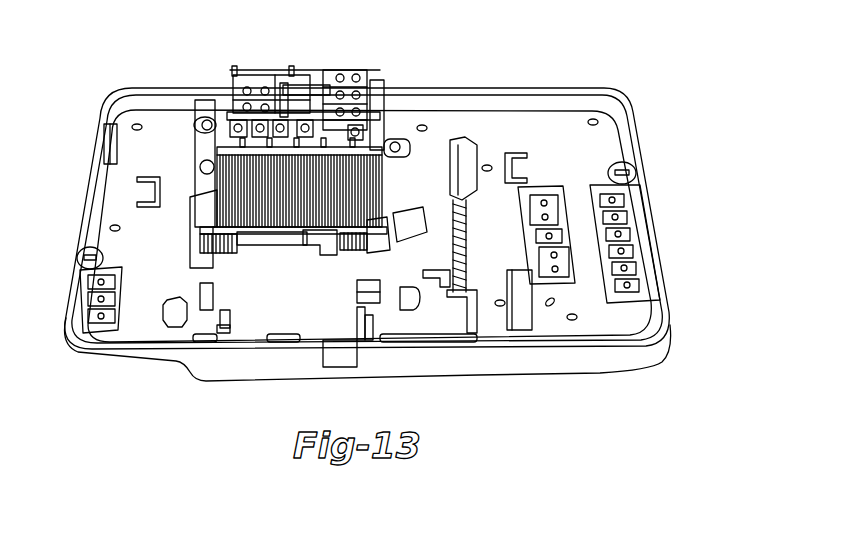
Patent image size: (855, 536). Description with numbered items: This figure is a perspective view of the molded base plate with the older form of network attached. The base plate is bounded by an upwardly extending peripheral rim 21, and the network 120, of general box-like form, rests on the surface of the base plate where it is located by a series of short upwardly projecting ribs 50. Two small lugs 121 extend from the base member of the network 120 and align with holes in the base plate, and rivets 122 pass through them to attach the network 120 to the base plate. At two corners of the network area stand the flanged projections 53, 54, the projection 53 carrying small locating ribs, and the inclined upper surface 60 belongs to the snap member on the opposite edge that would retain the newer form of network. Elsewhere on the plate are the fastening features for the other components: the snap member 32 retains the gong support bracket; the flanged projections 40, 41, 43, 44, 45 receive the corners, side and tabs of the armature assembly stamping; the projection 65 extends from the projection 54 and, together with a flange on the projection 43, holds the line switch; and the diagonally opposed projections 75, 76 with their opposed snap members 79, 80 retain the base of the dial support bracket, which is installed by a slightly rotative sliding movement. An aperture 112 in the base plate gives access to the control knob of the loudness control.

The peripheral rim 21 is at (556, 74).
The snap member 32 is at (140, 190).
The projection 40 is at (242, 235).
The projection 41 is at (318, 235).
The projection 43 is at (357, 293).
The projection 44 is at (228, 318).
The projection 45 is at (353, 330).
The ribs 50 is at (455, 145).
The projection 53 is at (198, 232).
The projection 54 is at (390, 225).
The inclined upper surface 60 is at (433, 285).
The projection 65 is at (393, 223).
The projection 75 is at (465, 160).
The projection 76 is at (523, 315).
The snap member 79 is at (525, 167).
The snap member 80 is at (455, 312).
The aperture 112 is at (173, 318).
The network 120 is at (336, 50).
The lugs 121 is at (197, 176).
The rivets 122 is at (200, 168).